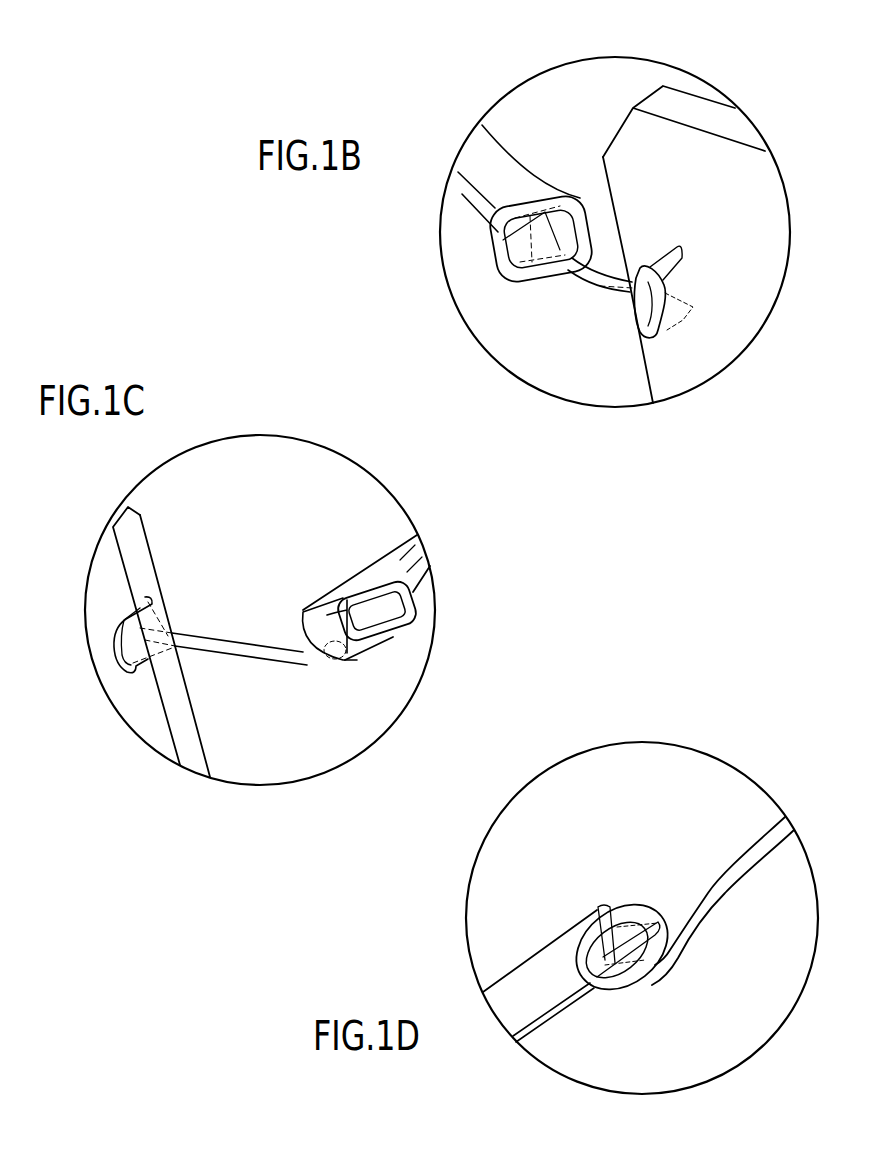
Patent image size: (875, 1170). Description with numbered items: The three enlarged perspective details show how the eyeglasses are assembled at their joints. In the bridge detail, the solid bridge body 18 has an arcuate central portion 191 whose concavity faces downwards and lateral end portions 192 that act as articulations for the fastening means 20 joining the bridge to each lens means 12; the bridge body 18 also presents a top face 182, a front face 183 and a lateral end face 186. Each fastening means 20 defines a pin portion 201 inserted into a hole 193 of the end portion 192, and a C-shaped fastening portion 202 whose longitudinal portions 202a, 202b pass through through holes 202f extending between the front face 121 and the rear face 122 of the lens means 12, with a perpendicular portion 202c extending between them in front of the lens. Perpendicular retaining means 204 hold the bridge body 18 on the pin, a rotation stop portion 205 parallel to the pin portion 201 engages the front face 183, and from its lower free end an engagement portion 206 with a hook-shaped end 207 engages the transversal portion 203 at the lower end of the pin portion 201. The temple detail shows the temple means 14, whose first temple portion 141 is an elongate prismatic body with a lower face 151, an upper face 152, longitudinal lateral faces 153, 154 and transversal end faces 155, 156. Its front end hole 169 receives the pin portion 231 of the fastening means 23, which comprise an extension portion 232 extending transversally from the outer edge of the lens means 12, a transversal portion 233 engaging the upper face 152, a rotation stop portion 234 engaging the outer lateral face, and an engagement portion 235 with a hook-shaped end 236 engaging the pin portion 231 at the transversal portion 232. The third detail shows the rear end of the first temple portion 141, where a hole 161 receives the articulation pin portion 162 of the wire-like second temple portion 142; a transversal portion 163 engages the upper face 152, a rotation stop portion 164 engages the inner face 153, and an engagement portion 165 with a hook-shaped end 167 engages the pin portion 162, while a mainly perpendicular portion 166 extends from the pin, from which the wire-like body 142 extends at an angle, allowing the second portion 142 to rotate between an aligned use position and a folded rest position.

In FIG. 1C, the lens means 12 is at (130, 702).
In FIG. 1C, the temple means 14 is at (417, 548).
In FIG. 1D, the temple means 14 is at (575, 1027).
In FIG. 1B, the bridge body 18 is at (481, 152).
In FIG. 1B, the fastening means 20 is at (585, 289).
In FIG. 1C, the fastening means 23 is at (103, 652).
In FIG. 1B, the front face 121 is at (757, 270).
In FIG. 1C, the front face 121 is at (157, 730).
In FIG. 1B, the rear face 122 is at (707, 99).
In FIG. 1C, the rear face 122 is at (111, 538).
In FIG. 1D, the first temple portion 141 is at (522, 978).
In FIG. 1D, the second temple portion 142 is at (723, 887).
In FIG. 1D, the lower face 151 is at (540, 1025).
In FIG. 1C, the upper face 152 is at (418, 568).
In FIG. 1D, the upper face 152 is at (547, 966).
In FIG. 1C, the longitudinal inner lateral face 153 is at (367, 590).
In FIG. 1C, the longitudinal outer lateral face 154 is at (425, 588).
In FIG. 1D, the longitudinal outer lateral face 154 is at (520, 1037).
In FIG. 1C, the transversal end face 155 is at (270, 642).
In FIG. 1D, the transversal end face 156 is at (650, 893).
In FIG. 1D, the hole 161 is at (628, 900).
In FIG. 1D, the articulation pin portion 162 is at (693, 960).
In FIG. 1D, the transversal portion 163 is at (600, 915).
In FIG. 1D, the rotation stop portion 164 is at (580, 950).
In FIG. 1D, the engagement portion 165 is at (613, 993).
In FIG. 1D, the perpendicular extension portion 166 is at (703, 925).
In FIG. 1D, the hook-shaped end 167 is at (663, 957).
In FIG. 1C, the end hole 169 is at (327, 603).
In FIG. 1B, the top face 182 is at (572, 207).
In FIG. 1B, the front face 183 is at (475, 208).
In FIG. 1B, the lateral end face 186 is at (607, 207).
In FIG. 1B, the intermediate portion 191 is at (458, 190).
In FIG. 1B, the lateral end portion 192 is at (497, 262).
In FIG. 1B, the hole 193 is at (577, 203).
In FIG. 1B, the pin portion 201 is at (500, 265).
In FIG. 1B, the fastening portion 202 is at (629, 330).
In FIG. 1B, the longitudinal portion 202a is at (683, 244).
In FIG. 1B, the longitudinal portion 202b is at (668, 330).
In FIG. 1B, the perpendicular portion 202c is at (643, 337).
In FIG. 1B, the through hole 202f is at (660, 338).
In FIG. 1B, the transversal portion 203 is at (613, 287).
In FIG. 1B, the retaining means 204 is at (547, 207).
In FIG. 1B, the rotation stop portion 205 is at (505, 272).
In FIG. 1B, the engagement portion 206 is at (543, 268).
In FIG. 1B, the hook-shaped end 207 is at (587, 233).
In FIG. 1C, the pin portion 231 is at (313, 607).
In FIG. 1C, the extension portion 232 is at (240, 652).
In FIG. 1C, the transversal portion 233 is at (370, 590).
In FIG. 1C, the rotation stop portion 234 is at (415, 595).
In FIG. 1C, the engagement portion 235 is at (392, 635).
In FIG. 1C, the hook-shaped end 236 is at (330, 667).